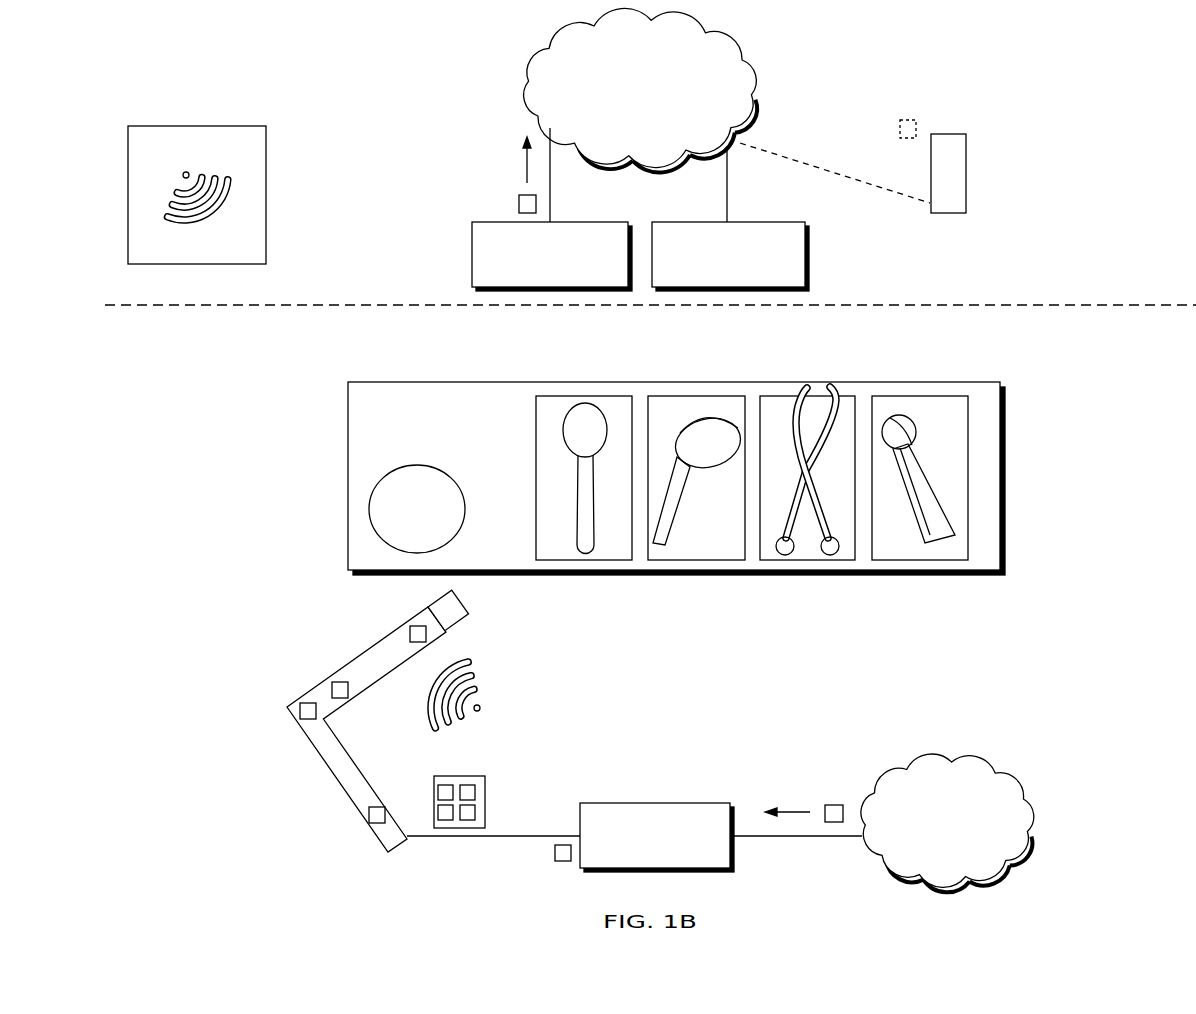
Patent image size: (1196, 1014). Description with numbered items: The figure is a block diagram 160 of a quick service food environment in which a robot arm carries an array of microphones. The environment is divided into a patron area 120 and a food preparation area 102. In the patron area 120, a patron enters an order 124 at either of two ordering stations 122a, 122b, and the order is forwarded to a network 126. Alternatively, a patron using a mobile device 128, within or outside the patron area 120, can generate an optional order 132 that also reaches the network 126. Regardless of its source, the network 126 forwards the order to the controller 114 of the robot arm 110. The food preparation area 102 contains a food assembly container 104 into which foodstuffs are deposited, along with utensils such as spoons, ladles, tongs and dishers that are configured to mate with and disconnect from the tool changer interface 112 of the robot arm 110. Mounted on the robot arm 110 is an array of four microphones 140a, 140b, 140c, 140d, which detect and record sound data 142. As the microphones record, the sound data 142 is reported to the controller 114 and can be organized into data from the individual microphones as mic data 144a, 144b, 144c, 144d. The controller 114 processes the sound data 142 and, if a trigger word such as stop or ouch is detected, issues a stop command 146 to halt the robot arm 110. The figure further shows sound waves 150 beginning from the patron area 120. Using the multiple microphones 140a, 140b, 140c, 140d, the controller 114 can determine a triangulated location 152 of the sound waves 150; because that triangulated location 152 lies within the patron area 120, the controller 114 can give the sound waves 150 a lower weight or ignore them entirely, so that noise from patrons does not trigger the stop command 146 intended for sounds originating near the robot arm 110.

The block diagram 160 is at (1148, 46).
The patron area 120 is at (184, 101).
The triangulated location 152 is at (266, 138).
The sound waves 150 is at (542, 712).
The order 124 is at (519, 205).
The network 126 is at (962, 851).
The ordering station 122a is at (472, 257).
The ordering station 122b is at (809, 252).
The optional order 132 is at (907, 120).
The mobile device 128 is at (967, 163).
The food preparation area 102 is at (348, 433).
The food assembly container 104 is at (383, 507).
The robot arm 110 is at (327, 763).
The tool changer interface 112 is at (446, 609).
The microphone 140a is at (427, 636).
The microphone 140b is at (333, 684).
The microphone 140c is at (302, 710).
The microphone 140d is at (372, 818).
The sound data 142 is at (434, 800).
The mic data 144a is at (452, 787).
The mic data 144b is at (477, 792).
The mic data 144c is at (477, 812).
The mic data 144d is at (443, 818).
The stop command 146 is at (562, 862).
The controller 114 is at (640, 856).